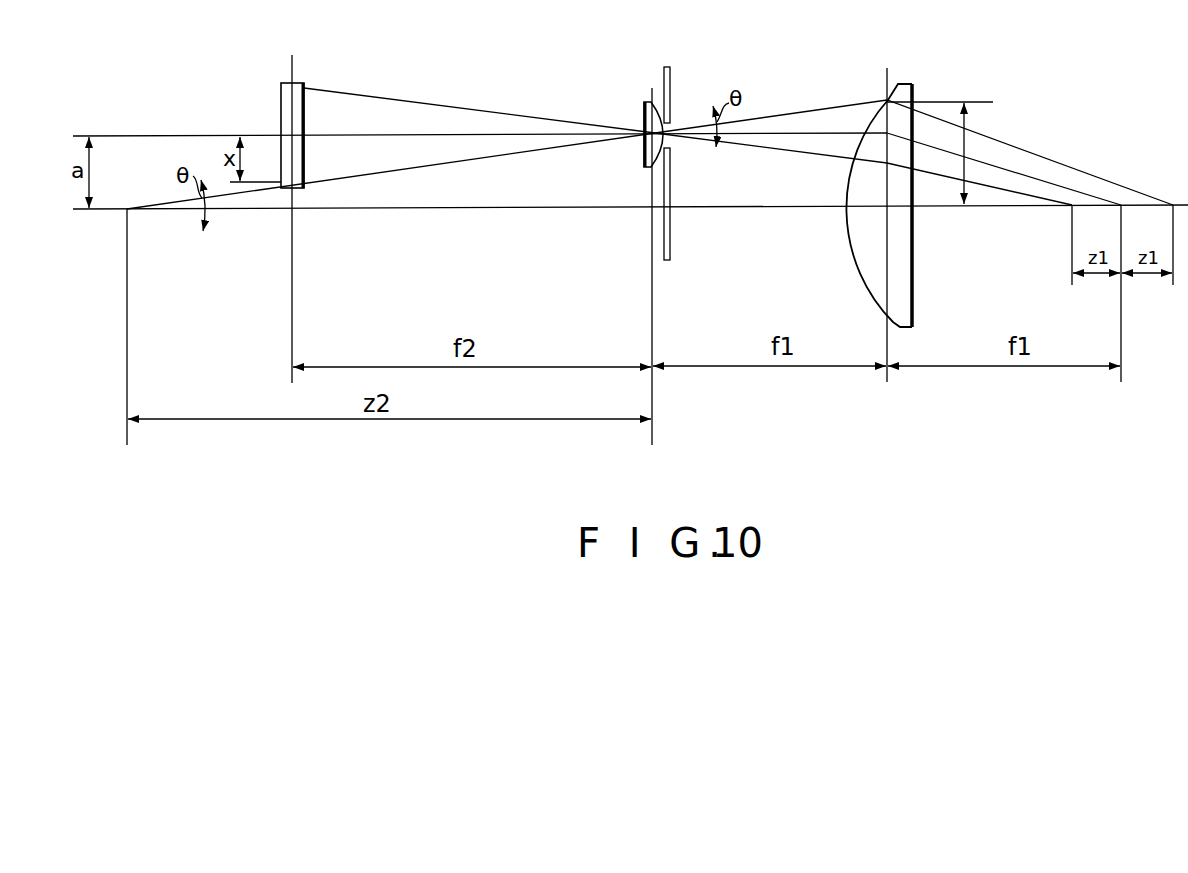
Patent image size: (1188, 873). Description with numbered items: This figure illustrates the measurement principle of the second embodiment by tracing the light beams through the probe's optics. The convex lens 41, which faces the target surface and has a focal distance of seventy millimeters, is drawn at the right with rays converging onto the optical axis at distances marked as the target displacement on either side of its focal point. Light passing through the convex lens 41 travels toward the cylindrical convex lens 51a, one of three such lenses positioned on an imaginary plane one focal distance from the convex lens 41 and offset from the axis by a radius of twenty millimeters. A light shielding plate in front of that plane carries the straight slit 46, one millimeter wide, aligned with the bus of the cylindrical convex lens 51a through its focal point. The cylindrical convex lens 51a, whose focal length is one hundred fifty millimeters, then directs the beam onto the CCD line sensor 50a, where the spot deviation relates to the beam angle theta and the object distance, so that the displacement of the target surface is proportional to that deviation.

The CCD line sensor 50a is at (284, 99).
The cylindrical convex lens 51a is at (643, 112).
The straight slit 46 is at (670, 86).
The convex lens 41 is at (912, 88).